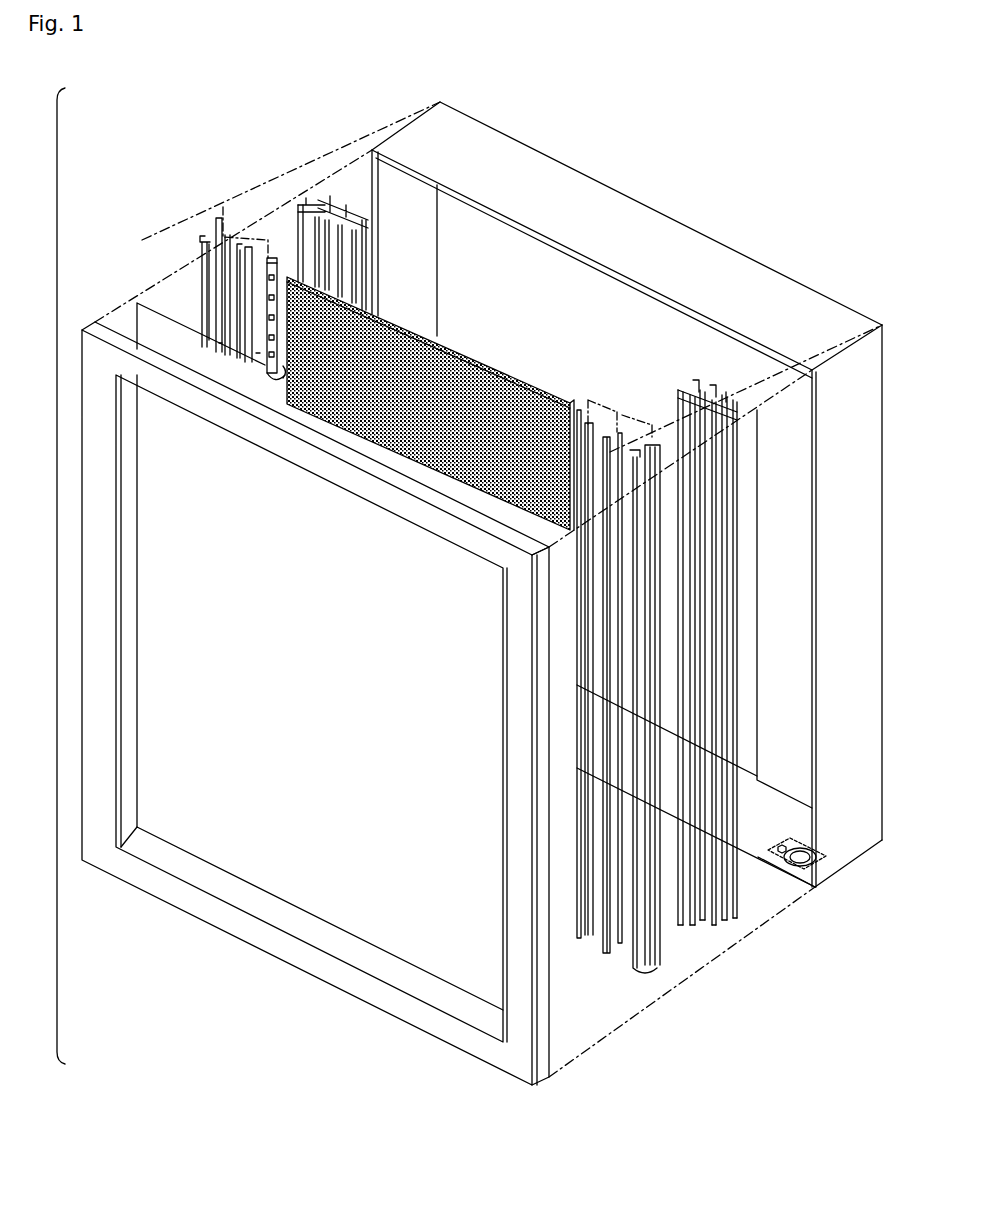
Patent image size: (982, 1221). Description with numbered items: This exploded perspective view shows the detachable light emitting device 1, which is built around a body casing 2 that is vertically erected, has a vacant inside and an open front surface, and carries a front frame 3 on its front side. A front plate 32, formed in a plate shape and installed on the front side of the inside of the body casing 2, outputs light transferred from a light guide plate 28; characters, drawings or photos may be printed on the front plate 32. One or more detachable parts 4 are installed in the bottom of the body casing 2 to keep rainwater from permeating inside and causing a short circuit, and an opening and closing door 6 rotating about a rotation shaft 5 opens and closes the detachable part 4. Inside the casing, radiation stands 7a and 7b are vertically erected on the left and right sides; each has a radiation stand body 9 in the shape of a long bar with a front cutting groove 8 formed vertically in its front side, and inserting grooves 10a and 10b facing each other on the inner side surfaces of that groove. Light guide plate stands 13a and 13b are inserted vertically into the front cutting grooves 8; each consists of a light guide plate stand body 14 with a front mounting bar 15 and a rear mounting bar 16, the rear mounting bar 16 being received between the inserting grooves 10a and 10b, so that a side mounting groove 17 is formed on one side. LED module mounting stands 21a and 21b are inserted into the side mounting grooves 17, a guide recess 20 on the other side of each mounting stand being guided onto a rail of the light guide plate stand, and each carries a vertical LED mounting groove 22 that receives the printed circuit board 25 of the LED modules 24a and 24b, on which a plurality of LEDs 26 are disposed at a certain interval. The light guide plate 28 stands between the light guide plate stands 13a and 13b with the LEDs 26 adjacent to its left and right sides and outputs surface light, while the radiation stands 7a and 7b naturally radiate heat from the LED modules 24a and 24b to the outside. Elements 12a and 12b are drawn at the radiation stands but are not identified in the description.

The detachable light emitting device 1 is at (47, 576).
The body casing 2 is at (598, 200).
The front frame 3 is at (270, 937).
The front plate 32 is at (424, 953).
The guide recess 20 is at (195, 268).
The light guide plate 28 is at (507, 377).
The radiation stand 7a is at (344, 207).
The radiation stand 7b is at (684, 376).
The first guide member 12a is at (313, 190).
The second guide member 12b is at (368, 297).
The inserting groove 10a is at (333, 217).
The inserting groove 10b is at (343, 222).
The radiation stand body 9 is at (357, 200).
The front cutting groove 8 is at (307, 257).
The light guide plate stand 13a is at (190, 308).
The light guide plate stand 13b is at (610, 712).
The light guide plate stand body 14 is at (217, 247).
The front mounting bar 15 is at (203, 253).
The rear mounting bar 16 is at (220, 233).
The side mounting groove 17 is at (233, 270).
The LED mounting groove 22 is at (250, 247).
The LED module mounting stand 21a is at (216, 343).
The LED module mounting stand 21b is at (630, 940).
The LED module 24a is at (252, 353).
The LED module 24b is at (576, 664).
The printed circuit board 25 is at (280, 372).
The LEDs 26 is at (283, 372).
The detachable part 4 is at (803, 848).
The rotation shaft 5 is at (786, 845).
The opening and closing door 6 is at (822, 888).